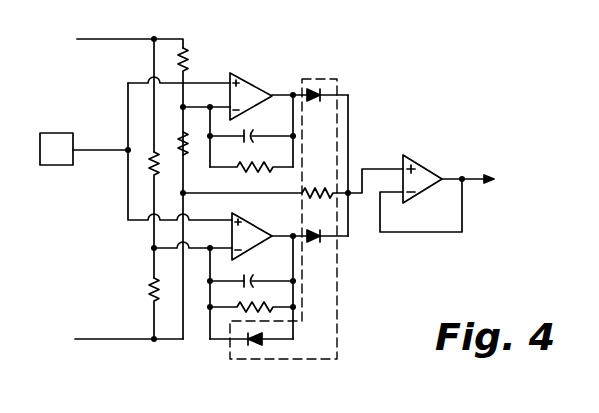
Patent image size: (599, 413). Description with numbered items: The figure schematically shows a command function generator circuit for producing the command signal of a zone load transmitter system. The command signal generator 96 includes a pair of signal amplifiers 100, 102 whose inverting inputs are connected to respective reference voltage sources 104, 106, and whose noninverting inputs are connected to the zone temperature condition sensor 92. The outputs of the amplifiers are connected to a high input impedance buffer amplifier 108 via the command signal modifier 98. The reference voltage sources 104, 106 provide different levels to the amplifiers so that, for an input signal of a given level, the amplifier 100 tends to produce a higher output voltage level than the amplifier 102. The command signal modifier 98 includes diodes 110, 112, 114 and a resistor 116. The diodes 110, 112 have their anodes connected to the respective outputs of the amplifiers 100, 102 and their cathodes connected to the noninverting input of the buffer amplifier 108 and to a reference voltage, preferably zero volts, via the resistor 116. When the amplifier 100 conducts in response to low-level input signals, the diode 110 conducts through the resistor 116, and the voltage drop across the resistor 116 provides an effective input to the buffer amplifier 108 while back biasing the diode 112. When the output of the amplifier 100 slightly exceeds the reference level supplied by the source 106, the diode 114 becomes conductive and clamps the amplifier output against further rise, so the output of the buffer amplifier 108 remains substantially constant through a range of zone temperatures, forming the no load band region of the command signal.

The zone temperature condition sensor 92 is at (84, 149).
The command signal generator 96 is at (263, 95).
The command signal modifier 98 is at (337, 311).
The signal amplifier 100 is at (252, 236).
The signal amplifier 102 is at (254, 72).
The reference voltage source 104 is at (182, 120).
The reference voltage source 106 is at (153, 268).
The buffer amplifier 108 is at (424, 160).
The diode 110 is at (316, 245).
The diode 112 is at (316, 90).
The diode 114 is at (254, 348).
The resistor 116 is at (315, 185).